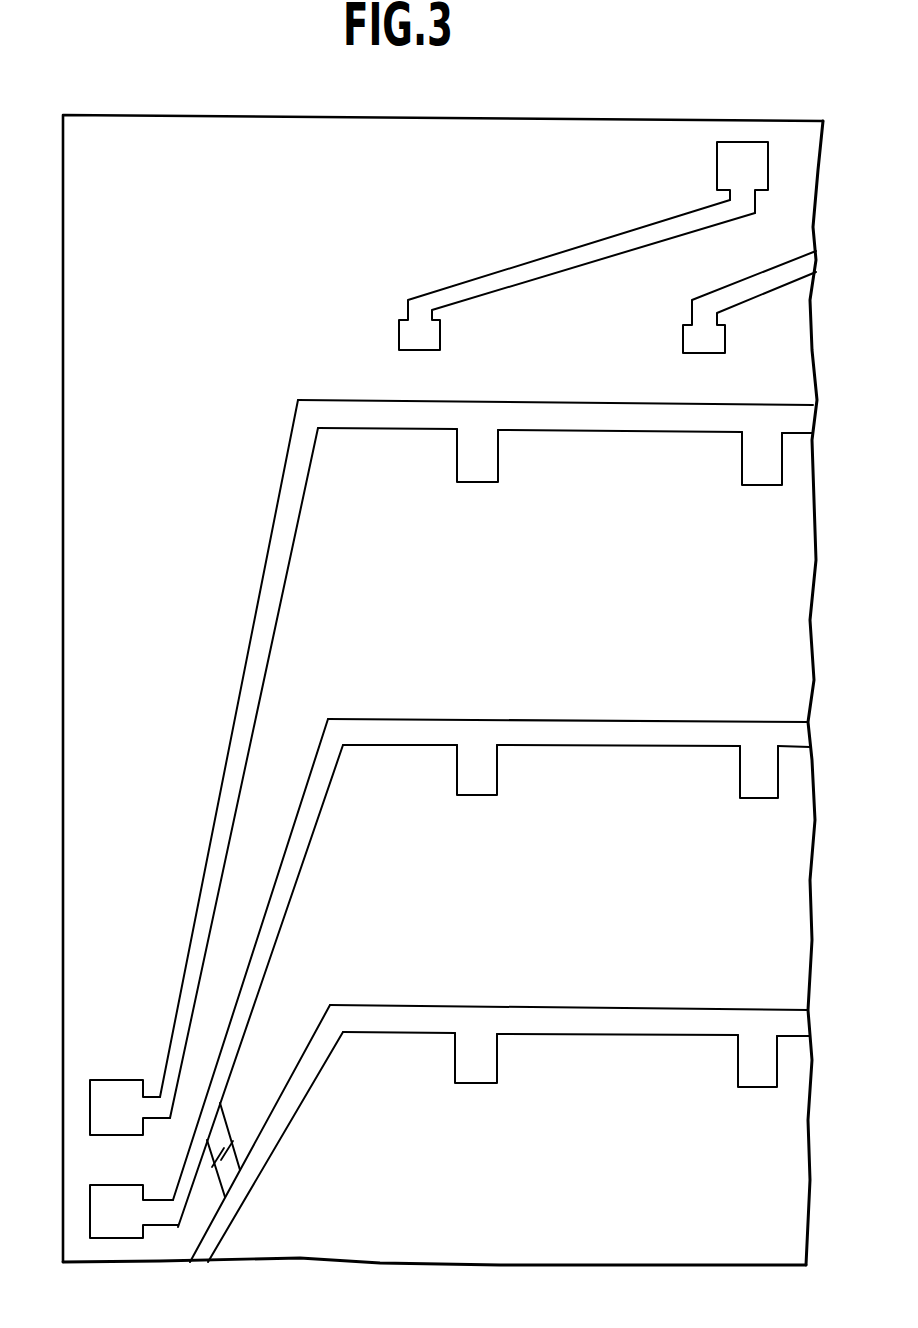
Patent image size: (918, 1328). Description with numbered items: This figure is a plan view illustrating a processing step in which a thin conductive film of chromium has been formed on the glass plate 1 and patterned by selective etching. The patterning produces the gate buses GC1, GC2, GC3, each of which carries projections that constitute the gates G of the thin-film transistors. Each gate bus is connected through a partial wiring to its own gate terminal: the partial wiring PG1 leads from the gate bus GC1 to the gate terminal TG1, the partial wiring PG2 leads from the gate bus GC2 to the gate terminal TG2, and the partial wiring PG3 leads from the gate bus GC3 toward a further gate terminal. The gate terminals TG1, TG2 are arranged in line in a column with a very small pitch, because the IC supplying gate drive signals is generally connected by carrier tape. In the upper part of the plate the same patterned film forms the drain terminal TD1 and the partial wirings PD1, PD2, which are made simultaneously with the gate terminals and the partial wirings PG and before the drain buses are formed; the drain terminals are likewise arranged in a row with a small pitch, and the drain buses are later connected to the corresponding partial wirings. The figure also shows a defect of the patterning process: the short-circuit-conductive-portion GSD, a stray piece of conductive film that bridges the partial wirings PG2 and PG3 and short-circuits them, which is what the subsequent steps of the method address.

The glass plate 1 is at (80, 414).
The drain terminal TD1 is at (727, 168).
The partial wiring PD1 is at (513, 276).
The partial wiring PD2 is at (740, 293).
The gate bus GC1 is at (628, 382).
The gate bus GC2 is at (638, 690).
The gate bus GC3 is at (642, 978).
The gate G is at (477, 463).
The partial wiring PG1 is at (280, 553).
The partial wiring PG2 is at (288, 882).
The partial wiring PG3 is at (270, 1158).
The gate terminal TG1 is at (115, 1100).
The gate terminal TG2 is at (150, 1155).
The short-circuit-conductive-portion GSD is at (221, 1136).